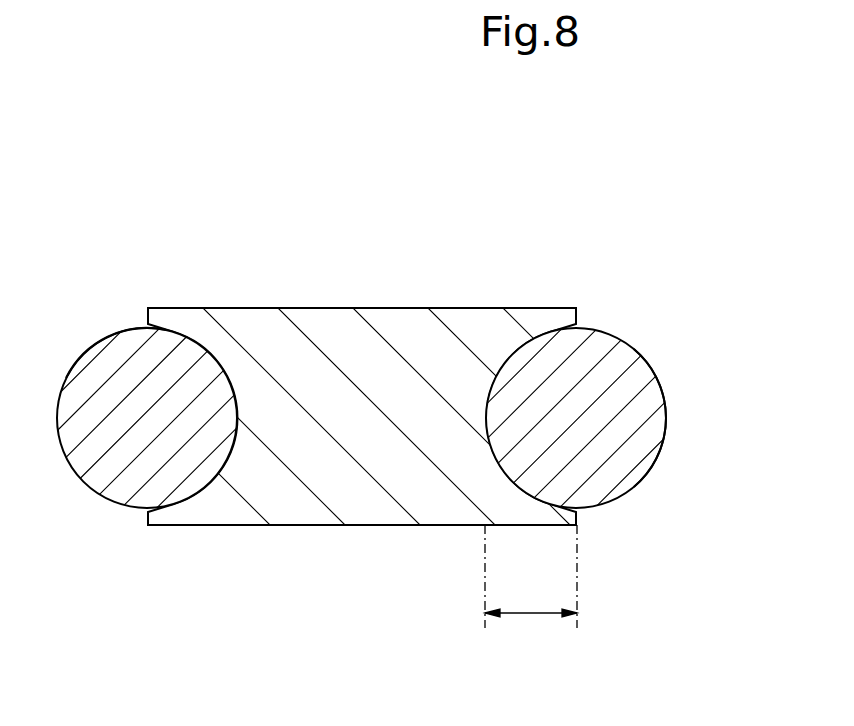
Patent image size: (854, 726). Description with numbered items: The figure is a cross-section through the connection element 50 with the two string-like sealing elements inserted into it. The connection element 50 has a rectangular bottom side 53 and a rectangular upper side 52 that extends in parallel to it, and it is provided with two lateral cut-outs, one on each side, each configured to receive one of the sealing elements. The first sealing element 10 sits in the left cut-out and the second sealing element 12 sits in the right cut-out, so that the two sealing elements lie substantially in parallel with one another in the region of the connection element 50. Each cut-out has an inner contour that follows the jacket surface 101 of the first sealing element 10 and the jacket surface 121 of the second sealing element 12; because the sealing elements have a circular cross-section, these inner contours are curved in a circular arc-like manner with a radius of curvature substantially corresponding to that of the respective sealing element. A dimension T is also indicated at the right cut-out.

The connection element 50 is at (405, 258).
The upper side 52 is at (327, 307).
The bottom side 53 is at (353, 526).
The first sealing element 10 is at (98, 408).
The jacket surface of the first sealing element 101 is at (115, 334).
The second sealing element 12 is at (598, 348).
The jacket surface of the second sealing element 121 is at (683, 399).
The thickness dimension T is at (531, 576).